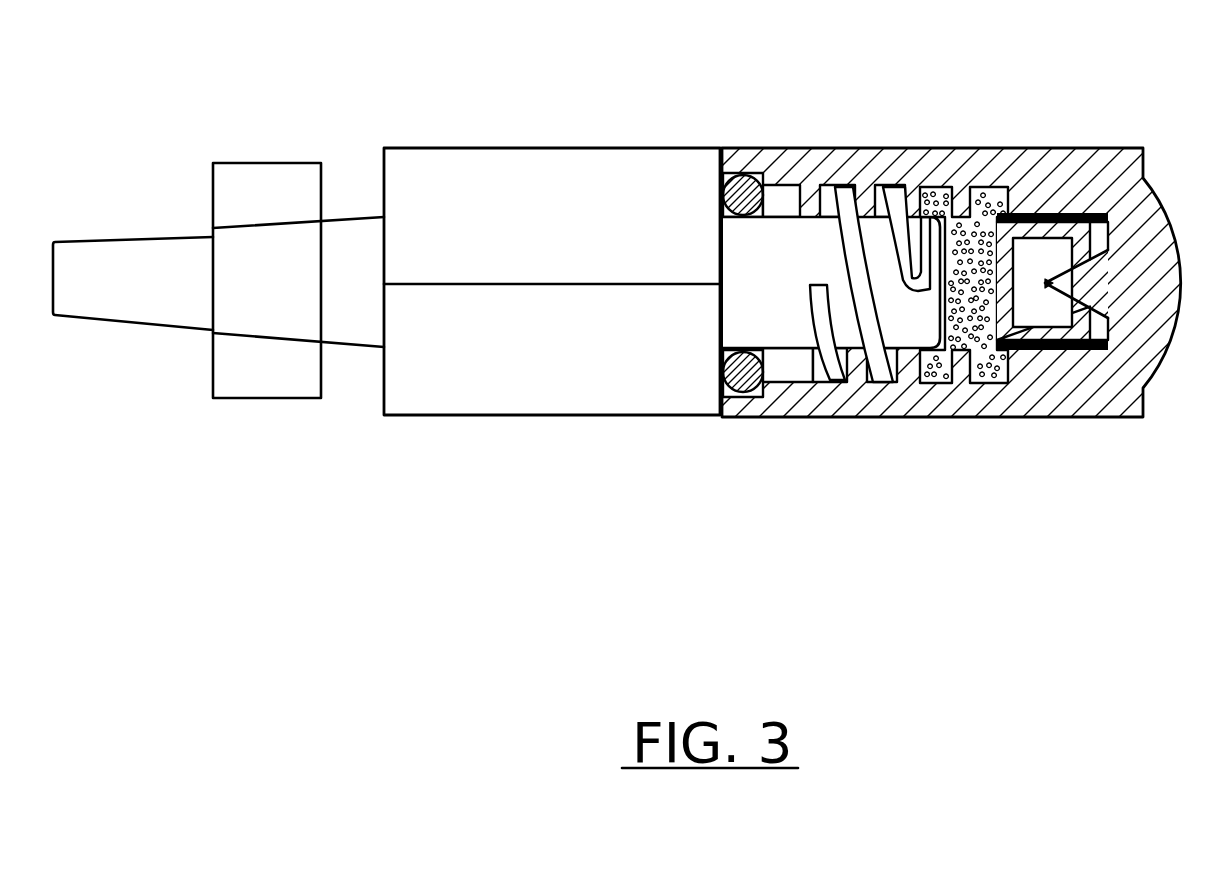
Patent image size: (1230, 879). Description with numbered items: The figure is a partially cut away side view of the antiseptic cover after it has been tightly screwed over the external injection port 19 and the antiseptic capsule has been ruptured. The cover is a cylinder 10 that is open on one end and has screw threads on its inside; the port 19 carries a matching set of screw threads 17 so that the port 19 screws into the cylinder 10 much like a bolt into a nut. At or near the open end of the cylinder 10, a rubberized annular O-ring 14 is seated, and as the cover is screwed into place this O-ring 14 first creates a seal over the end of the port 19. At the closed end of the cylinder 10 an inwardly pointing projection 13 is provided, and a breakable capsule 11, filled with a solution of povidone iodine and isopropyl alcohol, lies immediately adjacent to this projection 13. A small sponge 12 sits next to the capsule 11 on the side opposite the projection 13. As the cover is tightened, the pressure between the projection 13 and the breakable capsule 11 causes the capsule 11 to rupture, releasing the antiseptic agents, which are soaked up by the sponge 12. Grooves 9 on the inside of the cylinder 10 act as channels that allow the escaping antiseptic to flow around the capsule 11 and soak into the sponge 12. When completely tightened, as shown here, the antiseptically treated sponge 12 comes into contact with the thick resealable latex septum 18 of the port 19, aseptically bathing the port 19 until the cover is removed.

The grooves 9 is at (1137, 418).
The cylinder 10 is at (1118, 177).
The breakable capsule 11 is at (1067, 213).
The sponge 12 is at (947, 206).
The projection 13 is at (1052, 288).
The O-ring 14 is at (745, 387).
The screw threads 17 is at (878, 365).
The septum 18 is at (965, 312).
The external injection port 19 is at (575, 237).